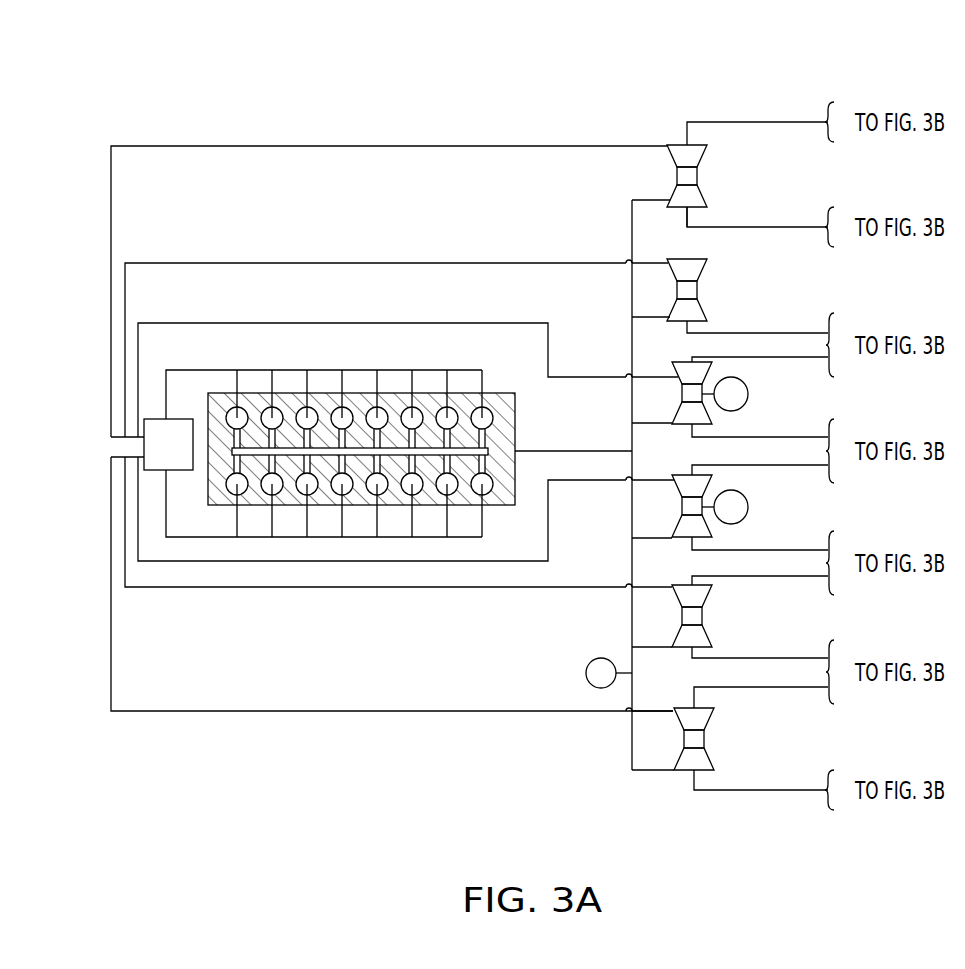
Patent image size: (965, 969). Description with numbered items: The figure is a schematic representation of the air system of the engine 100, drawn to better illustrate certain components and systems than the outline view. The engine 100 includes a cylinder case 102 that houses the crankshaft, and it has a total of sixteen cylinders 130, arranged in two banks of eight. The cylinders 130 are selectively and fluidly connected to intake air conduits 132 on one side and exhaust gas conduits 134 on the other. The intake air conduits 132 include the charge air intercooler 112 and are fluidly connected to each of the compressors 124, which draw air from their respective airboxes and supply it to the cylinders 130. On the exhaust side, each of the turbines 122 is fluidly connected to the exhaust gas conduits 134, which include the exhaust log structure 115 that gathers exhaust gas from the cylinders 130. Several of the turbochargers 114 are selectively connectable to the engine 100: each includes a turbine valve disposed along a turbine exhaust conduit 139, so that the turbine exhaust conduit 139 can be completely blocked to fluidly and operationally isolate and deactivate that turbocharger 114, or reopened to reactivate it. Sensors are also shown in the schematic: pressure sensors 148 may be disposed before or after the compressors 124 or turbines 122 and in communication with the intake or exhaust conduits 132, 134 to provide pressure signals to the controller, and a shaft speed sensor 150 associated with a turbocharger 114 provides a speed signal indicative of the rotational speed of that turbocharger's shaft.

The engine 100 is at (170, 108).
The intake air conduits 132 is at (292, 146).
The charge air intercooler 112 is at (143, 452).
The cylinder case 102 is at (512, 412).
The exhaust log structure 115 is at (325, 470).
The cylinders 130 is at (232, 488).
The exhaust gas conduits 134 is at (618, 317).
The compressors 124 is at (671, 144).
The turbine exhaust conduit 139 is at (683, 218).
The turbochargers 114 is at (646, 171).
The shaft speed sensor 150 is at (733, 377).
The pressure sensors 148 is at (587, 669).
The turbines 122 is at (677, 760).